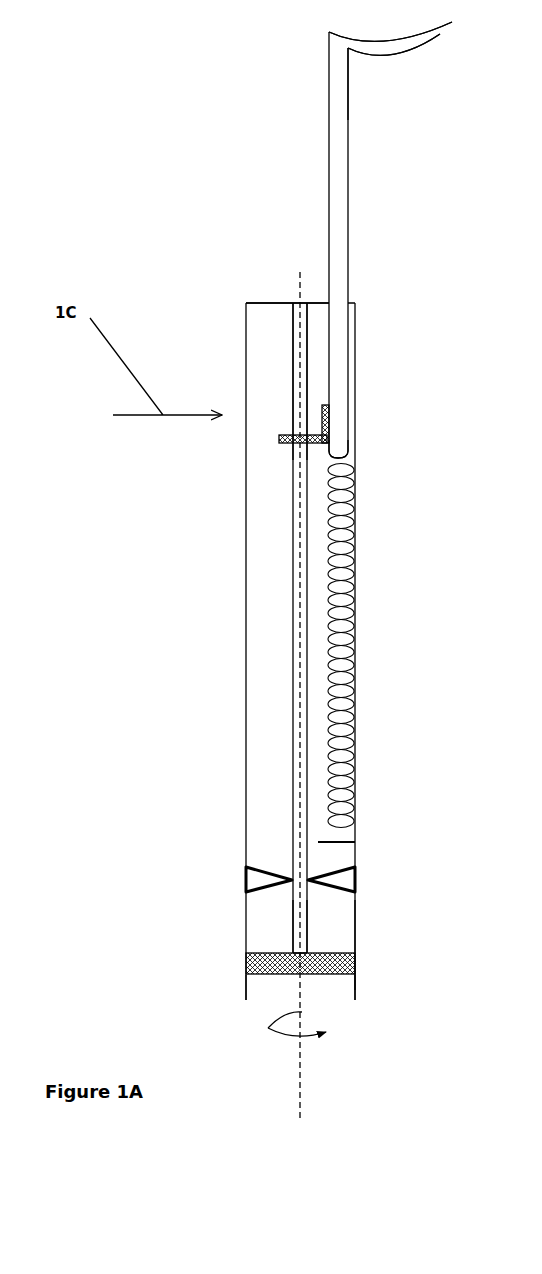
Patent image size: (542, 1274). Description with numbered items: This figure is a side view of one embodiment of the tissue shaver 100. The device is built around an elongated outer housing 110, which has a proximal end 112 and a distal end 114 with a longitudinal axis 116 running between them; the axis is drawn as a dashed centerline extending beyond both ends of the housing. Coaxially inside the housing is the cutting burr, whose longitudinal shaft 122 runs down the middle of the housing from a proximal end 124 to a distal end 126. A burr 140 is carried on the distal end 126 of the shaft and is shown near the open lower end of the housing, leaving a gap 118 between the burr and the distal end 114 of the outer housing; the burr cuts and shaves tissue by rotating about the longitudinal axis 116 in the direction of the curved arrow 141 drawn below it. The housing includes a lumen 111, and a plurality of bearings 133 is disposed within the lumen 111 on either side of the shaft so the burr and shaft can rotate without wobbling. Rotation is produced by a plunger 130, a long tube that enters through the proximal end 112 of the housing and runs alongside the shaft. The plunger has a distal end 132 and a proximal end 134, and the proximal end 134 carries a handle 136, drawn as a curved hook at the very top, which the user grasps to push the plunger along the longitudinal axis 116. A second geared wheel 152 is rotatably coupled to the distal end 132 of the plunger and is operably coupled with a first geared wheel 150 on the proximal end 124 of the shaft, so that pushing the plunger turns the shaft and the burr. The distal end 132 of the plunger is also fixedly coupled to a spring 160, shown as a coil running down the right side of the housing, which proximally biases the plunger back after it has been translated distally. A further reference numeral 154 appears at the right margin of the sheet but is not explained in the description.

The tissue shaver 100 is at (162, 212).
The outer housing 110 is at (245, 580).
The lumen 111 is at (268, 792).
The proximal end 112 is at (355, 312).
The distal end 114 is at (340, 918).
The longitudinal axis 116 is at (300, 1078).
The gap 118 is at (268, 992).
The longitudinal shaft 122 is at (292, 738).
The proximal end 124 is at (293, 452).
The distal end 126 is at (295, 932).
The plunger 130 is at (329, 216).
The distal end 132 is at (338, 446).
The bearings 133 is at (257, 882).
The proximal end 134 is at (345, 57).
The handle 136 is at (438, 33).
The burr 140 is at (355, 972).
The arrow 141 is at (268, 1028).
The first geared wheel 150 is at (282, 427).
The second geared wheel 152 is at (327, 409).
The collar element 154 is at (529, 602).
The spring 160 is at (327, 670).